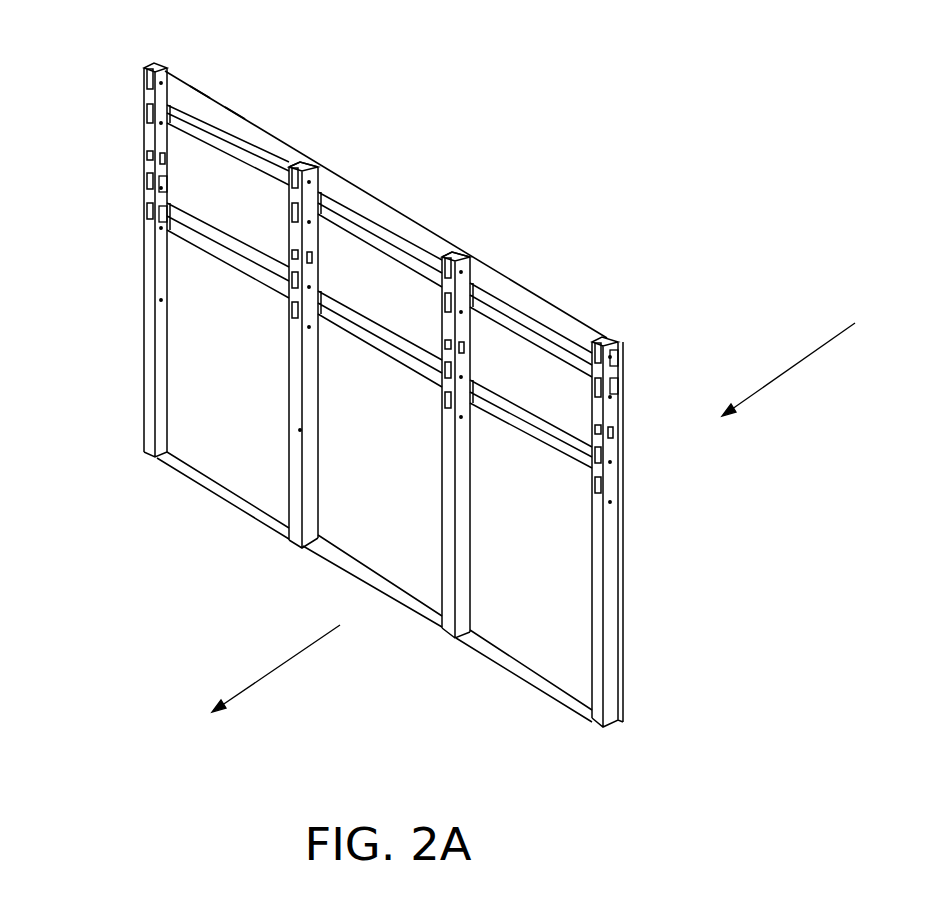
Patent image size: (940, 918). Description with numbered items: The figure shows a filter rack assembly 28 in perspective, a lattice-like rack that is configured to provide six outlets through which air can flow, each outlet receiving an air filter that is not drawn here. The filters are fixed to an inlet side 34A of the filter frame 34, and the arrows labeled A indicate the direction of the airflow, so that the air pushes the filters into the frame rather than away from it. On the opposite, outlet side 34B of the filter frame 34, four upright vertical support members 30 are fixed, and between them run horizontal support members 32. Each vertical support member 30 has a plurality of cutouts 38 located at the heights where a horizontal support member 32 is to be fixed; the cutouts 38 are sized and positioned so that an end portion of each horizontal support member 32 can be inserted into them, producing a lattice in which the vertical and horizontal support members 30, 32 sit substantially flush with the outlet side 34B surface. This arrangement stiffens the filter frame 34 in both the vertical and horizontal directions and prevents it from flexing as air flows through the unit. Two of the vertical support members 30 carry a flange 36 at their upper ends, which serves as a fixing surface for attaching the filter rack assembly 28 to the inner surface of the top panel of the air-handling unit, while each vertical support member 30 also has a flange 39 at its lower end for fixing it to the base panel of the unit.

The filter rack assembly 28 is at (612, 282).
The vertical support member 30 is at (143, 319).
The horizontal support member 32 is at (267, 182).
The filter frame 34 is at (398, 210).
The inlet side 34A is at (235, 110).
The outlet side 34B is at (200, 106).
The flange 36 is at (305, 160).
The cutout 38 is at (152, 197).
The flange 39 is at (156, 455).